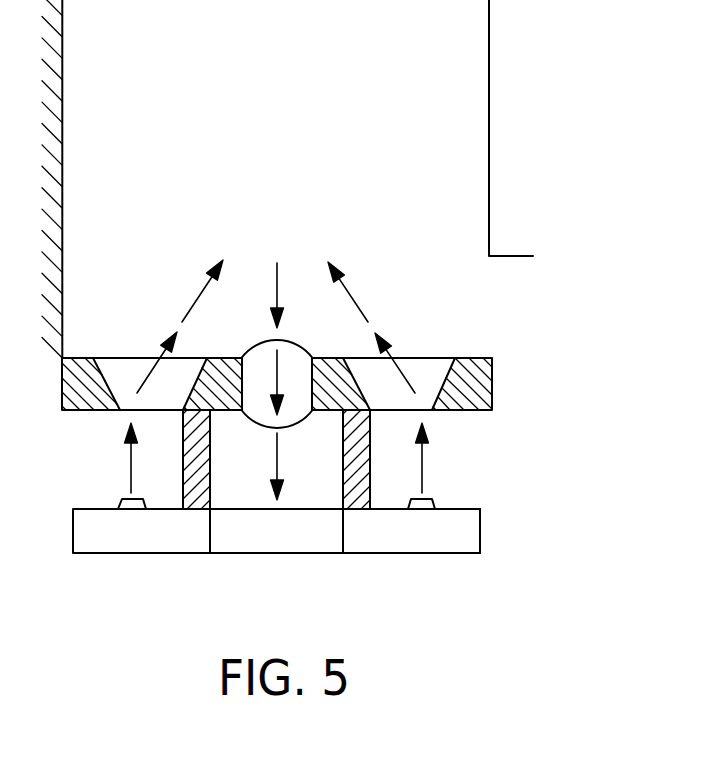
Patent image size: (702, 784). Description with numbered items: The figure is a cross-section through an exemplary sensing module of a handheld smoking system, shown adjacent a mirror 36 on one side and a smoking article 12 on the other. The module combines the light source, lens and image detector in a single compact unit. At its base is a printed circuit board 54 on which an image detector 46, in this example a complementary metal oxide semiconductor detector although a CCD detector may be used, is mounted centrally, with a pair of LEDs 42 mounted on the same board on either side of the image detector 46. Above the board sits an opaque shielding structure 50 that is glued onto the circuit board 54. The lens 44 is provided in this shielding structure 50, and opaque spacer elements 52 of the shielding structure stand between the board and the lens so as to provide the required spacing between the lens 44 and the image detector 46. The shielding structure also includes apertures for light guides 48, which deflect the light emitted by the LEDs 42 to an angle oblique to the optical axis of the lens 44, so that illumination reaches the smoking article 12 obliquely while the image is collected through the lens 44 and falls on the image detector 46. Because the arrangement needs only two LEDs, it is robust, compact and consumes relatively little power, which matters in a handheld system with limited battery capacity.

The smoking article 12 is at (508, 15).
The mirror 36 is at (55, 62).
The LEDs 42 is at (115, 505).
The lens 44 is at (295, 340).
The image detector 46 is at (282, 543).
The light guides 48 is at (125, 373).
The shielding structure 50 is at (492, 385).
The opaque spacer elements 52 is at (353, 460).
The printed circuit board 54 is at (428, 543).